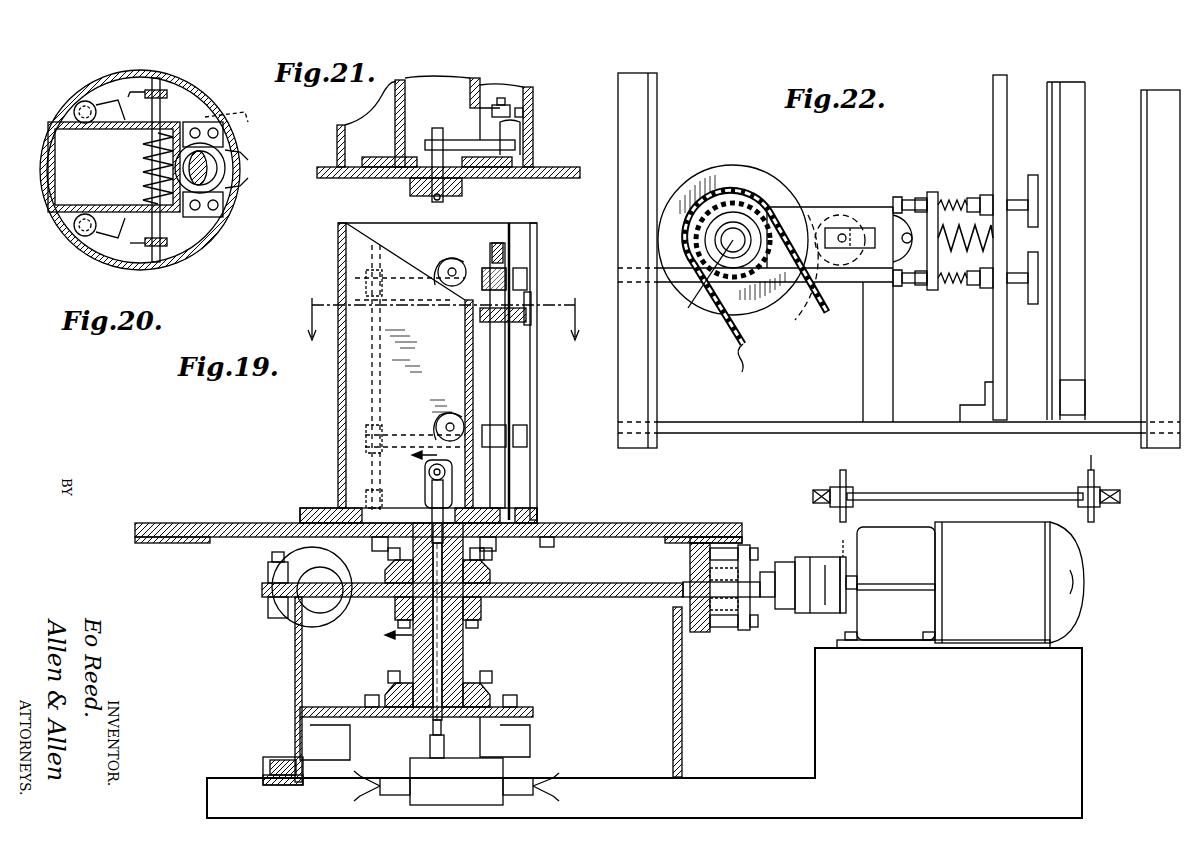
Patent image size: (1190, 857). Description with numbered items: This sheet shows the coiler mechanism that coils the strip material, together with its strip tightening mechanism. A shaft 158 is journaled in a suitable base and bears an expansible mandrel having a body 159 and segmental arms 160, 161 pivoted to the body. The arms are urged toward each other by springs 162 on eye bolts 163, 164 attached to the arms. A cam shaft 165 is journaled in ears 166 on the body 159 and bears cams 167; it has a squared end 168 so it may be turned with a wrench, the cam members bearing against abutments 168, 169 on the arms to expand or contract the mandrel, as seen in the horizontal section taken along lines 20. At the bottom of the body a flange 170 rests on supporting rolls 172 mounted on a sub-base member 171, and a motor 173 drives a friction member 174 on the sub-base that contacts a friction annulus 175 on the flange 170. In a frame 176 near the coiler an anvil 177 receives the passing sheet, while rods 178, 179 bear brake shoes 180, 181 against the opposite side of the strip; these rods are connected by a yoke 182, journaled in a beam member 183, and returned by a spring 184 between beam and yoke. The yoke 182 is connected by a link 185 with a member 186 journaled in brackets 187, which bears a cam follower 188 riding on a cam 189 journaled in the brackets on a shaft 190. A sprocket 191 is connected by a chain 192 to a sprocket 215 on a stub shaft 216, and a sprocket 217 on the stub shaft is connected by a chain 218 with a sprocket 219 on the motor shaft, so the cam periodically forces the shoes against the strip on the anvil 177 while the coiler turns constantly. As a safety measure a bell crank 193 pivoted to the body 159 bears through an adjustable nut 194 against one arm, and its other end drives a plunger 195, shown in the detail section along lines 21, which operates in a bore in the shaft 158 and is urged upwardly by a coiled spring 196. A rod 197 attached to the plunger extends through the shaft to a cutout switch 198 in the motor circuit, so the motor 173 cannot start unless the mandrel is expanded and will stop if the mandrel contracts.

In FIG. 19, the shaft 158 is at (470, 655).
In FIG. 20, the mandrel body 159 is at (58, 165).
In FIG. 19, the mandrel body 159 is at (338, 400).
In FIG. 20, the segmental arm 160 is at (208, 96).
In FIG. 19, the segmental arm 160 is at (537, 400).
In FIG. 20, the segmental arm 161 is at (222, 232).
In FIG. 20, the springs 162 is at (143, 170).
In FIG. 20, the eye bolt 163 is at (148, 115).
In FIG. 20, the eye bolt 164 is at (152, 233).
In FIG. 20, the cam shaft 165 is at (218, 168).
In FIG. 19, the cam shaft 165 is at (512, 323).
In FIG. 20, the ears 166 is at (244, 182).
In FIG. 19, the ears 166 is at (533, 307).
In FIG. 20, the cams 167 is at (225, 155).
In FIG. 20, the squared end / abutment 168 is at (225, 128).
In FIG. 19, the squared end / abutment 168 is at (494, 245).
In FIG. 20, the abutment 169 is at (225, 200).
In FIG. 19, the flange 170 is at (575, 523).
In FIG. 19, the sub-base member 171 is at (570, 597).
In FIG. 19, the supporting rolls 172 is at (272, 560).
In FIG. 19, the motor 173 is at (645, 670).
In FIG. 19, the friction member 174 is at (688, 552).
In FIG. 19, the friction annulus 175 is at (692, 523).
In FIG. 22, the frame 176 is at (655, 356).
In FIG. 22, the anvil 177 is at (1062, 186).
In FIG. 22, the rod 178 is at (958, 198).
In FIG. 22, the rod 179 is at (960, 288).
In FIG. 22, the brake shoe 180 is at (1028, 170).
In FIG. 22, the brake shoe 181 is at (1030, 305).
In FIG. 22, the yoke 182 is at (920, 195).
In FIG. 22, the beam member 183 is at (995, 100).
In FIG. 22, the spring 184 is at (958, 285).
In FIG. 22, the link 185 is at (900, 225).
In FIG. 22, the member 186 is at (836, 228).
In FIG. 22, the brackets 187 is at (812, 205).
In FIG. 22, the cam follower 188 is at (855, 212).
In FIG. 22, the cam 189 is at (715, 158).
In FIG. 22, the shaft 190 is at (700, 310).
In FIG. 22, the sprocket 191 is at (755, 285).
In FIG. 19, the chain 192 is at (1091, 460).
In FIG. 22, the chain 192 is at (757, 366).
In FIG. 21, the bell crank 193 is at (462, 138).
In FIG. 21, the adjustable nut 194 is at (523, 112).
In FIG. 21, the plunger 195 is at (430, 196).
In FIG. 19, the plunger 195 is at (428, 505).
In FIG. 19, the coiled spring 196 is at (485, 553).
In FIG. 19, the rod 197 is at (445, 635).
In FIG. 19, the cutout switch 198 is at (428, 762).
In FIG. 19, the sprocket 215 is at (1097, 522).
In FIG. 19, the stub shaft 216 is at (925, 493).
In FIG. 19, the sprocket 217 is at (848, 478).
In FIG. 19, the chain 218 is at (826, 545).
In FIG. 19, the sprocket 219 is at (835, 608).
In FIG. 19, the section line 20— 20 is at (436, 318).
In FIG. 19, the section line 21— 21 is at (391, 548).